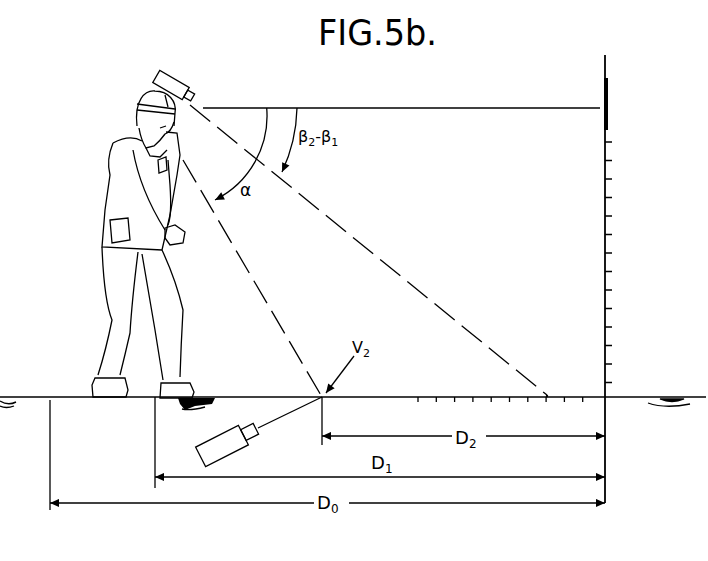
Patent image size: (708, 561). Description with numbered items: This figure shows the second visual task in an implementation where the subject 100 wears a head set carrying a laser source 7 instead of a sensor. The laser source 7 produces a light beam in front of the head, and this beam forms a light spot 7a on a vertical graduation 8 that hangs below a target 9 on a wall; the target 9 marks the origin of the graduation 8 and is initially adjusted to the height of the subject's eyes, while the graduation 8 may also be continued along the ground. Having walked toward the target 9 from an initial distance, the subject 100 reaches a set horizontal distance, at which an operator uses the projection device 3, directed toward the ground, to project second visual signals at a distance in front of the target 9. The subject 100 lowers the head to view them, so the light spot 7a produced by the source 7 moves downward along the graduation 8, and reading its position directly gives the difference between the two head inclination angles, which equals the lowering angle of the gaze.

The subject 100 is at (105, 157).
The laser source 7 is at (172, 82).
The light spot 7a is at (546, 392).
The graduation 8 is at (604, 348).
The target 9 is at (607, 92).
The projection device 3 is at (222, 450).